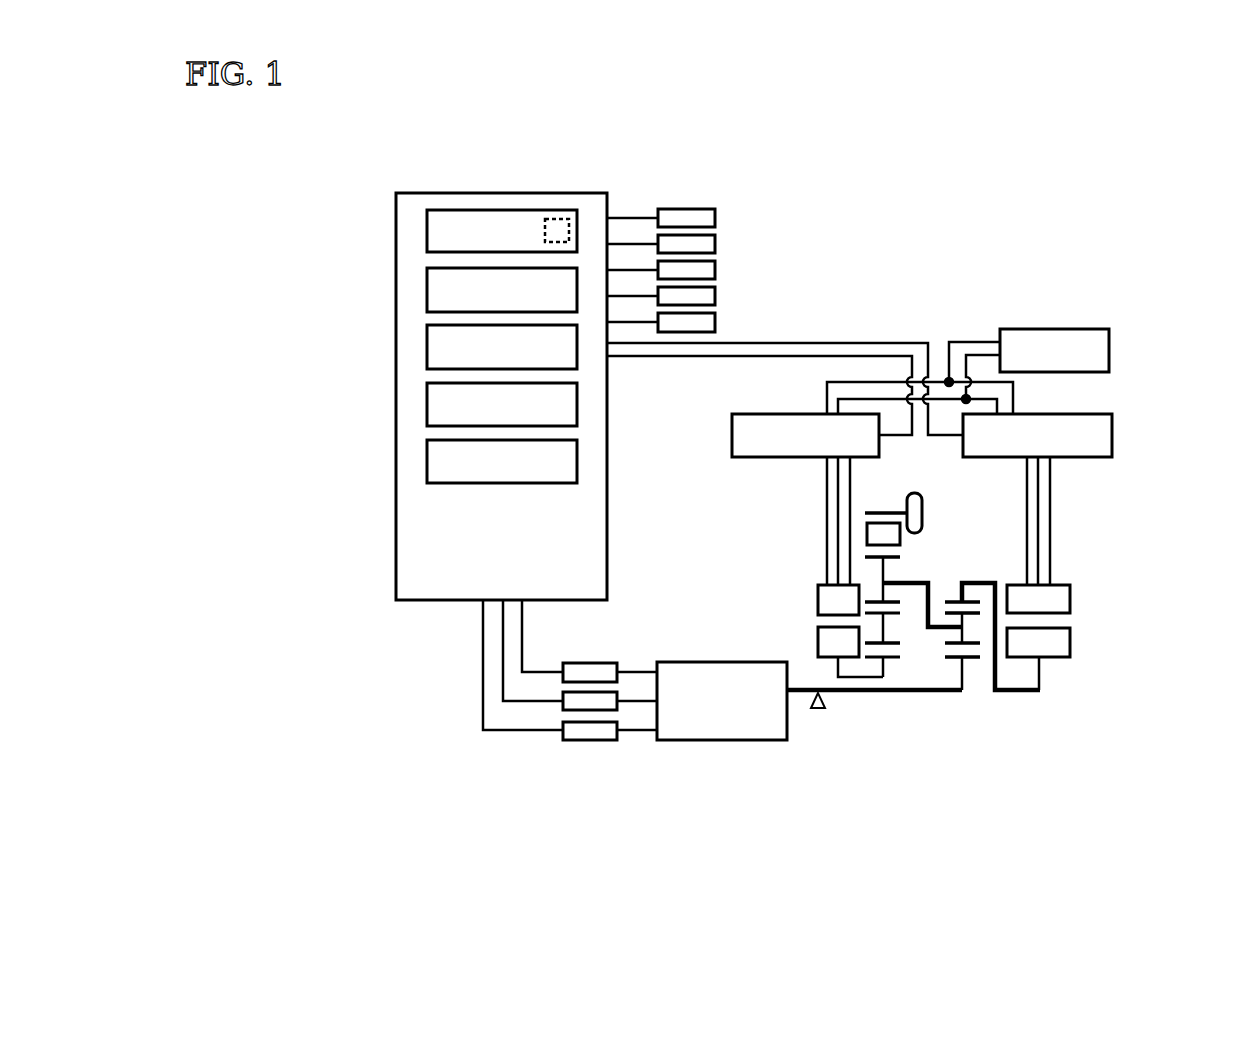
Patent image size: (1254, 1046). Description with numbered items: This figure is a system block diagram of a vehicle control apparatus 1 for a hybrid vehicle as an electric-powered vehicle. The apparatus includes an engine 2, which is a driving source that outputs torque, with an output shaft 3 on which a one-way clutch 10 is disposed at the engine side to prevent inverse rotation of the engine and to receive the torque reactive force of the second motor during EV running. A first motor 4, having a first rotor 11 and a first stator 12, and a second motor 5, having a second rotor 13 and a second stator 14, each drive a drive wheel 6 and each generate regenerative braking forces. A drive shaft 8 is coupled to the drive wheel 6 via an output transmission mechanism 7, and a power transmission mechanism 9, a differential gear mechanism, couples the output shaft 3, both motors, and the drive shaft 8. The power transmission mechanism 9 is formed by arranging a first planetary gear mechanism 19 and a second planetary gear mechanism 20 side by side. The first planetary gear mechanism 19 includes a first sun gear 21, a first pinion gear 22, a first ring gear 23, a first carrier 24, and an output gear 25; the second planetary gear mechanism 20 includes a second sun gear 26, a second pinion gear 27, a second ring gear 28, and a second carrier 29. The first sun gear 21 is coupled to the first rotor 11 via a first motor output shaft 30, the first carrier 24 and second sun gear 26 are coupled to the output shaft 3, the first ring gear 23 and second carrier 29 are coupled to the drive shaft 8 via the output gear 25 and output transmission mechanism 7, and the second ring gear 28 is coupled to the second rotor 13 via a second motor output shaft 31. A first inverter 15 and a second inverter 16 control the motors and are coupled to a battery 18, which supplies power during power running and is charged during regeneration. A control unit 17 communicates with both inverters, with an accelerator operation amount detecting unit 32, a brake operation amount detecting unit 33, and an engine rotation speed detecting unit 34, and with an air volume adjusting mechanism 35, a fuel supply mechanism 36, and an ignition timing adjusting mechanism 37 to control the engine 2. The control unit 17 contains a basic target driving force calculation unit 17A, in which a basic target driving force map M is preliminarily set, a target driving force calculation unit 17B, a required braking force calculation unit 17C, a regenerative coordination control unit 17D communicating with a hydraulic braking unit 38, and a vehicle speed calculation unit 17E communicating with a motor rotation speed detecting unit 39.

The vehicle control apparatus 1 is at (1015, 225).
The engine 2 is at (685, 662).
The output shaft 3 is at (860, 679).
The first motor 4 is at (790, 582).
The second motor 5 is at (1124, 580).
The drive wheel 6 is at (923, 503).
The output transmission mechanism 7 is at (902, 538).
The drive shaft 8 is at (883, 510).
The power transmission mechanism 9 is at (1103, 545).
The one-way clutch 10 is at (815, 710).
The first rotor 11 is at (818, 634).
The first stator 12 is at (818, 601).
The second rotor 13 is at (1072, 641).
The second stator 14 is at (1072, 600).
The first inverter 15 is at (732, 436).
The second inverter 16 is at (1114, 436).
The control unit 17 is at (413, 193).
The basic target driving force calculation unit 17A is at (427, 229).
The target driving force calculation unit 17B is at (427, 287).
The required braking force calculation unit 17C is at (427, 344).
The regenerative coordination control unit 17D is at (427, 402).
The vehicle speed calculation unit 17E is at (427, 459).
The battery 18 is at (1111, 348).
The first planetary gear mechanism 19 is at (892, 752).
The second planetary gear mechanism 20 is at (998, 732).
The first sun gear 21 is at (895, 662).
The first pinion gear 22 is at (899, 648).
The first ring gear 23 is at (903, 615).
The first carrier 24 is at (912, 620).
The output gear 25 is at (900, 555).
The second sun gear 26 is at (970, 662).
The second pinion gear 27 is at (968, 615).
The second ring gear 28 is at (952, 597).
The second carrier 29 is at (905, 584).
The first motor output shaft 30 is at (840, 692).
The second motor output shaft 31 is at (1030, 692).
The accelerator operation amount detecting unit 32 is at (717, 216).
The brake operation amount detecting unit 33 is at (717, 242).
The engine rotation speed detecting unit 34 is at (717, 268).
The air volume adjusting mechanism 35 is at (590, 662).
The fuel supply mechanism 36 is at (563, 705).
The ignition timing adjusting mechanism 37 is at (590, 742).
The hydraulic braking unit 38 is at (717, 294).
The motor rotation speed detecting unit 39 is at (717, 320).
The basic target driving force map M is at (557, 218).